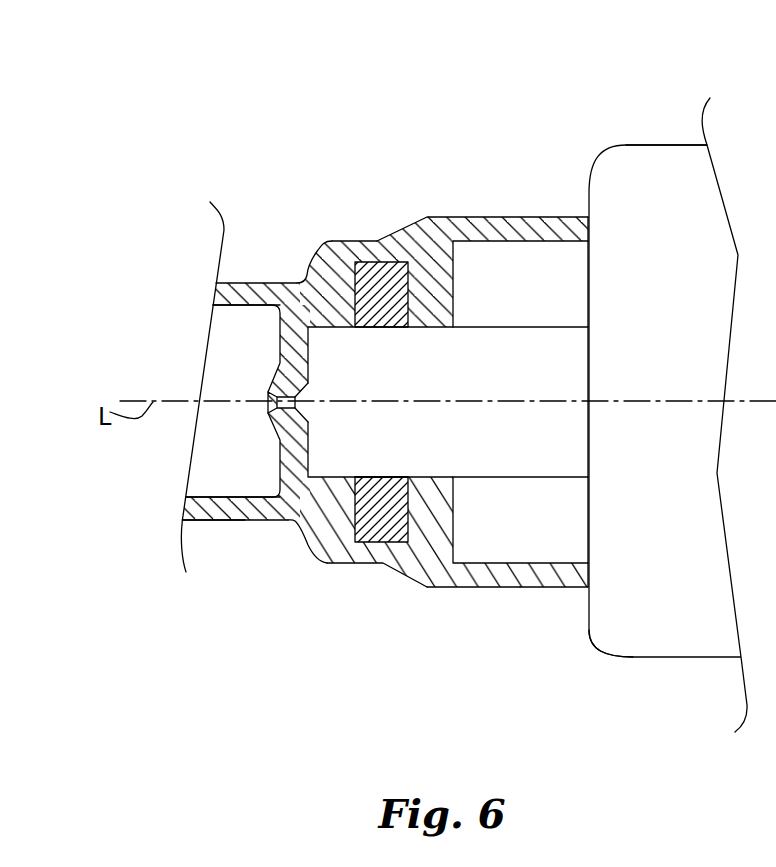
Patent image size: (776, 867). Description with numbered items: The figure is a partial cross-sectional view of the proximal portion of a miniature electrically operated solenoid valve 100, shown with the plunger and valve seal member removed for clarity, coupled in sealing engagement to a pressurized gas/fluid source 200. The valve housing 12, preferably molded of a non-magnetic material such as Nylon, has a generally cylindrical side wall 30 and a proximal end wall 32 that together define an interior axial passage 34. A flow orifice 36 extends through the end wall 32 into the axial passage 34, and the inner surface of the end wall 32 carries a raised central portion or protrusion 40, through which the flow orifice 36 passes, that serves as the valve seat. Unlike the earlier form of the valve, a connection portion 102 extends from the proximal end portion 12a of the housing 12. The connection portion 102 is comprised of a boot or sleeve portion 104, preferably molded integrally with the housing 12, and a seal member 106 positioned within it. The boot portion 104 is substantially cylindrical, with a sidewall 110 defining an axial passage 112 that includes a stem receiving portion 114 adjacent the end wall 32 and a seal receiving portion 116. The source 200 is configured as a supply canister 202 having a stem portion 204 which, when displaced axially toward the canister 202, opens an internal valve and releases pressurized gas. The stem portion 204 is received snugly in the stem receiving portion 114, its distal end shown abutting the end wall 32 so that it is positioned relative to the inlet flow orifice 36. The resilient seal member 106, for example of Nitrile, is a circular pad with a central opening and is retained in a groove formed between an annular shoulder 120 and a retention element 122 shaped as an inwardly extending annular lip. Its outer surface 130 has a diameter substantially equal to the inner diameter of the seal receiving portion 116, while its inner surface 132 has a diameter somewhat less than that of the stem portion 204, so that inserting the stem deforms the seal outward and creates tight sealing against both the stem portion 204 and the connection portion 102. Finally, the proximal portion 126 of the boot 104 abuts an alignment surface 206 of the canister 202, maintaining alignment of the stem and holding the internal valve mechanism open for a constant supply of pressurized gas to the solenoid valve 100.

The housing 12 is at (257, 263).
The proximal end portion 12a is at (241, 524).
The cylindrical side wall 30 is at (198, 522).
The proximal end wall 32 is at (288, 333).
The axial passage 34 is at (246, 471).
The flow orifice 36 is at (301, 500).
The raised central portion or protrusion 40 is at (266, 377).
The solenoid valve 100 is at (436, 146).
The connection portion 102 is at (397, 185).
The boot or sleeve portion 104 is at (384, 235).
The seal member 106 is at (383, 547).
The sidewall 110 is at (493, 590).
The axial passage 112 is at (506, 530).
The stem receiving portion 114 is at (304, 426).
The seal receiving portion 116 is at (328, 280).
The annular shoulder 120 is at (326, 484).
The retention element 122 is at (430, 290).
The proximal portion 126 is at (553, 598).
The outer surface 130 is at (397, 545).
The inner surface 132 is at (395, 475).
The pressurized gas/fluid source 200 is at (585, 135).
The supply canister 202 is at (658, 135).
The stem portion 204 is at (517, 325).
The alignment surface 206 is at (589, 630).